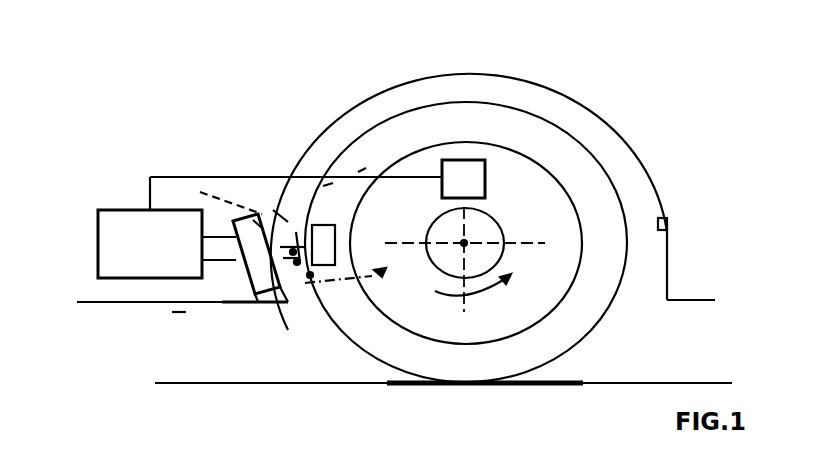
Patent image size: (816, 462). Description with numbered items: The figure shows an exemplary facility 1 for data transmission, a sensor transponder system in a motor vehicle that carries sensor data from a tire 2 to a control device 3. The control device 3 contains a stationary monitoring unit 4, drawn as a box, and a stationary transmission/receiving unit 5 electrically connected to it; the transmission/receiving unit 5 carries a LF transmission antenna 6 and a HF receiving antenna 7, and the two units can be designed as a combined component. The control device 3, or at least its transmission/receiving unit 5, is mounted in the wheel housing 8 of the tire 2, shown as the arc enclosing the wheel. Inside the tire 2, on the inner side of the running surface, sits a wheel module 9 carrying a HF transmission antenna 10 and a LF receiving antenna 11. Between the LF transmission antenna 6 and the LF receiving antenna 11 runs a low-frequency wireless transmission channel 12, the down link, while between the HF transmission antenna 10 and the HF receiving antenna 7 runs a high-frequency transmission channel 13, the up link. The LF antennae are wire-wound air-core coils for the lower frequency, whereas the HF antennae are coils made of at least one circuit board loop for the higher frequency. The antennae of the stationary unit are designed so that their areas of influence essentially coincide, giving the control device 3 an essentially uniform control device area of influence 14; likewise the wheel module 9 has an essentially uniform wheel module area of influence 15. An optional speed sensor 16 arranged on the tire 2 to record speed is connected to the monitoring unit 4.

The facility for data transmission 1 is at (268, 62).
The tire 2 is at (577, 336).
The control device 3 is at (153, 140).
The stationary monitoring unit 4 is at (108, 255).
The stationary transmission/receiving unit 5 is at (240, 273).
The LF transmission antenna 6 is at (295, 255).
The HF receiving antenna 7 is at (253, 220).
The wheel housing 8 is at (668, 228).
The wheel module 9 is at (327, 241).
The HF transmission antenna 10 is at (300, 210).
The LF receiving antenna 11 is at (310, 275).
The transmission channel 12 is at (297, 262).
The transmission channel 13 is at (280, 214).
The control device area of influence 14 is at (382, 277).
The wheel module area of influence 15 is at (233, 298).
The speed sensor 16 is at (487, 178).